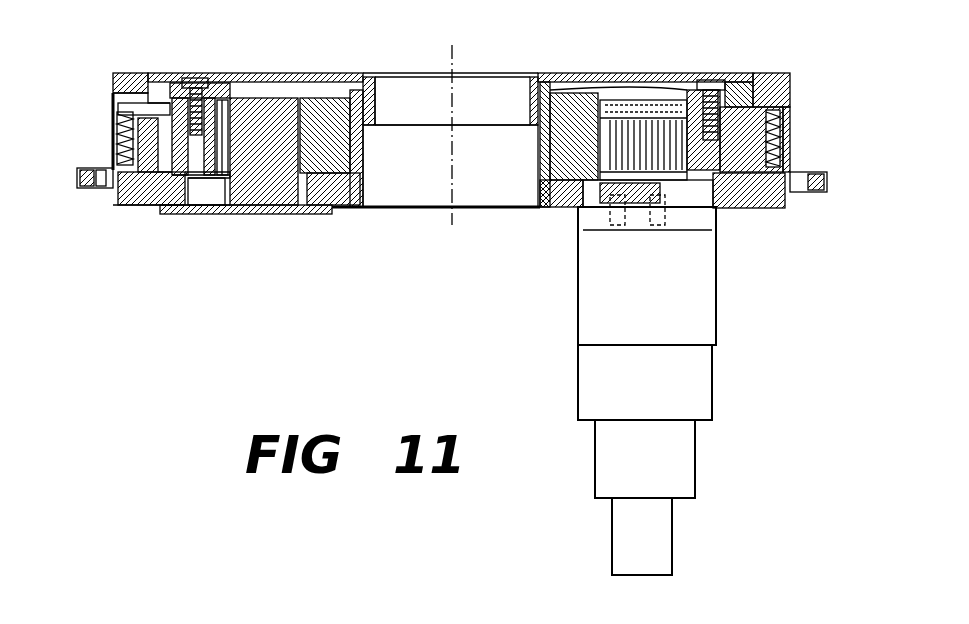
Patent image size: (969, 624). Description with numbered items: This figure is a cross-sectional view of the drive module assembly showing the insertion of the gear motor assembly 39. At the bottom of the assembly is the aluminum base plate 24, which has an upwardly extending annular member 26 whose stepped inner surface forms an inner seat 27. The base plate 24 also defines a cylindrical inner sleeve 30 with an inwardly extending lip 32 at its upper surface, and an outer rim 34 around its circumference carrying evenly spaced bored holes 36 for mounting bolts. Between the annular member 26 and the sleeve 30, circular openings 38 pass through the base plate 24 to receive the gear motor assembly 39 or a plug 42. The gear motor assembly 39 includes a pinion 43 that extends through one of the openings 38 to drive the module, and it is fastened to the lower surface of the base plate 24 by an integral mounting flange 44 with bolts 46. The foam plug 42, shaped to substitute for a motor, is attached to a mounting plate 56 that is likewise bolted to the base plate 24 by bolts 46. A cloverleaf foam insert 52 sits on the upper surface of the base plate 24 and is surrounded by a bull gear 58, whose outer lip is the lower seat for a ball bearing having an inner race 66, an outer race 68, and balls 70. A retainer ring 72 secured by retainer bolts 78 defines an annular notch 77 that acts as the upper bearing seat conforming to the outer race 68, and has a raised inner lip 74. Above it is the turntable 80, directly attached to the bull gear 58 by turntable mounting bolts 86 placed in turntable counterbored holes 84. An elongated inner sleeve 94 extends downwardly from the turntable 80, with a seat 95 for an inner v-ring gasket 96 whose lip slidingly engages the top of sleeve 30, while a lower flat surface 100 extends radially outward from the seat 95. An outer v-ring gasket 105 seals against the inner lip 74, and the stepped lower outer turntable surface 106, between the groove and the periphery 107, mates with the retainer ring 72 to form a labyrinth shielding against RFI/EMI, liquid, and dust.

The base plate 24 is at (740, 208).
The annular member 26 is at (790, 160).
The inner seat 27 is at (788, 140).
The inner sleeve 30 is at (545, 178).
The inwardly extending lip 32 is at (545, 130).
The outer rim 34 is at (85, 192).
The bored holes 36 is at (108, 190).
The circular openings 38 is at (205, 212).
The gear motor assembly 39 is at (690, 340).
The plug 42 is at (242, 203).
The pinion 43 is at (598, 208).
The mounting flange 44 is at (590, 208).
The bolts 46 is at (645, 230).
The insert 52 is at (340, 215).
The mounting plate 56 is at (275, 217).
The bull gear 58 is at (212, 90).
The inner race 66 is at (148, 200).
The outer race 68 is at (183, 213).
The balls 70 is at (118, 150).
The retainer ring 72 is at (783, 50).
The inner lip 74 is at (740, 47).
The annular notch 77 is at (712, 78).
The retainer bolts 78 is at (118, 152).
The turntable 80 is at (285, 75).
The turntable counterbored holes 84 is at (205, 78).
The turntable mounting bolts 86 is at (700, 77).
The elongated inner sleeve 94 is at (532, 100).
The seat 95 is at (378, 104).
The inner v-ring gasket 96 is at (540, 75).
The lower flat surface 100 is at (345, 80).
The outer v-ring gasket 105 is at (158, 75).
The lower outer turntable surface 106 is at (790, 112).
The periphery 107 is at (790, 82).